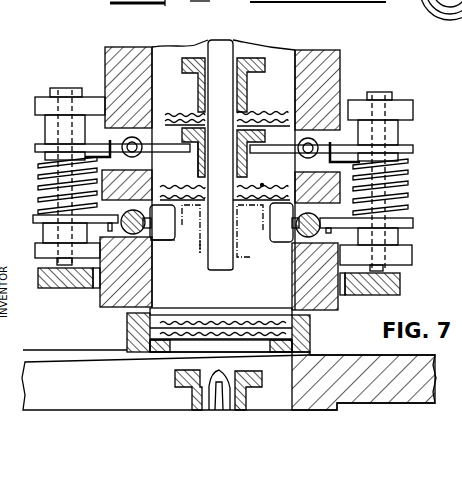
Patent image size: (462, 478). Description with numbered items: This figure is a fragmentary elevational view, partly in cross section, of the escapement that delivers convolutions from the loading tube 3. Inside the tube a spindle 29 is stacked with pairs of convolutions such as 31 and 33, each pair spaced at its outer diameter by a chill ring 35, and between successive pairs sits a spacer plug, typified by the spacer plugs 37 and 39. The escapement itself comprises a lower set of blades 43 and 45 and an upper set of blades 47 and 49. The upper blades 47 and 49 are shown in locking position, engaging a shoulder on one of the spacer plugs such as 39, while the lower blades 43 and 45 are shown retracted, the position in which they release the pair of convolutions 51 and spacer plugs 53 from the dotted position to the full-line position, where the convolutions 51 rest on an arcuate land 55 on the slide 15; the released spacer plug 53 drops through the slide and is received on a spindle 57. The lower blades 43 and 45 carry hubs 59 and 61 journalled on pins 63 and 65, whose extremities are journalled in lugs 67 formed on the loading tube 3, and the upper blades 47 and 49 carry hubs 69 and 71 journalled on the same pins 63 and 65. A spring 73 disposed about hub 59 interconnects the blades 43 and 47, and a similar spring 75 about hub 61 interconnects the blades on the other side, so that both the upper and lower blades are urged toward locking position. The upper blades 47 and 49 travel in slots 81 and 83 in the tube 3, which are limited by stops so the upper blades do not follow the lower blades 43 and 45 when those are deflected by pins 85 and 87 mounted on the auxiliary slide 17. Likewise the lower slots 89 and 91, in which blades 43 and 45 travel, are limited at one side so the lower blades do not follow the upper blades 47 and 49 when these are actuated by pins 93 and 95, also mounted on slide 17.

The loading tube 3 is at (341, 67).
The slide 15 is at (127, 333).
The auxiliary slide 17 is at (400, 286).
The spindle 29 is at (232, 266).
The convolution 31 is at (266, 129).
The convolution 33 is at (263, 116).
The chill ring 35 is at (166, 113).
The spacer plug 37 is at (249, 81).
The spacer plug 39 is at (196, 164).
The lower blade 43 is at (33, 218).
The lower blade 45 is at (413, 224).
The upper blade 47 is at (35, 148).
The upper blade 49 is at (413, 149).
The pair of convolutions 51 is at (262, 184).
The spacer plugs 53 is at (195, 250).
The land 55 is at (156, 354).
The spindle 57 is at (215, 377).
The hub 59 is at (40, 168).
The hub 61 is at (408, 176).
The pin 63 is at (62, 88).
The pin 65 is at (382, 92).
The lugs 67 is at (35, 101).
The hub 69 is at (45, 130).
The hub 71 is at (401, 128).
The spring 73 is at (38, 187).
The spring 75 is at (408, 197).
The slot 81 is at (109, 142).
The slot 83 is at (341, 128).
The pin 85 is at (184, 242).
The pin 87 is at (290, 238).
The lower slot 89 is at (175, 228).
The lower slot 91 is at (271, 218).
The pin 93 is at (182, 135).
The pin 95 is at (300, 156).